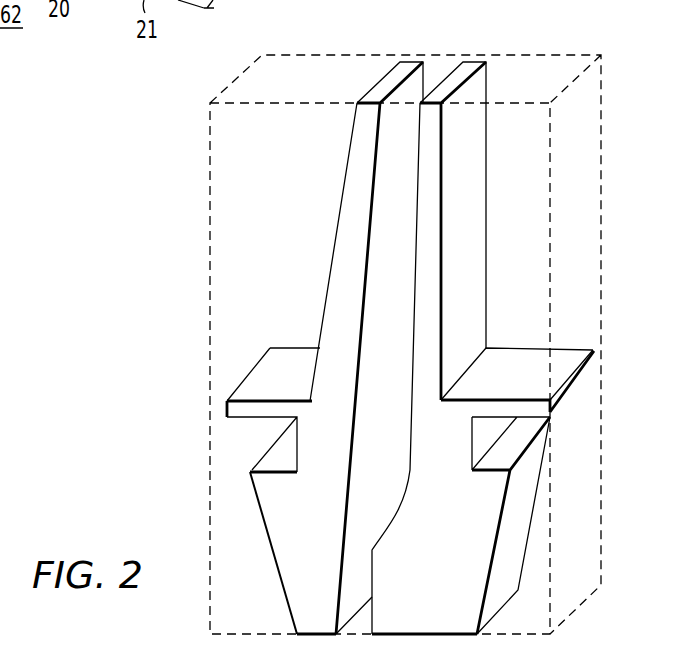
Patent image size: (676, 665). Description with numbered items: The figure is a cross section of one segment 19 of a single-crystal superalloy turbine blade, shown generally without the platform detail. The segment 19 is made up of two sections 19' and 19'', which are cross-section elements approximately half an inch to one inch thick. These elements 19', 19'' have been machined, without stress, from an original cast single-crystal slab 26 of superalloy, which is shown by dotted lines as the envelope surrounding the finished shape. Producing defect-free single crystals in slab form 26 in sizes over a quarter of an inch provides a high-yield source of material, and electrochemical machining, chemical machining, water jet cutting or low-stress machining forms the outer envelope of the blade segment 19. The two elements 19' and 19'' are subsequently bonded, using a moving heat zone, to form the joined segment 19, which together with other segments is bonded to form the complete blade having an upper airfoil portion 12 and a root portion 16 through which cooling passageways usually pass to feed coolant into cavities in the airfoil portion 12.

The upper airfoil portion 12 is at (378, 317).
The root portion 16 is at (230, 523).
The segment 19 is at (399, 317).
The cross-section element 19' is at (345, 348).
The cross-section element 19'' is at (451, 348).
The single crystal slab 26 is at (211, 187).